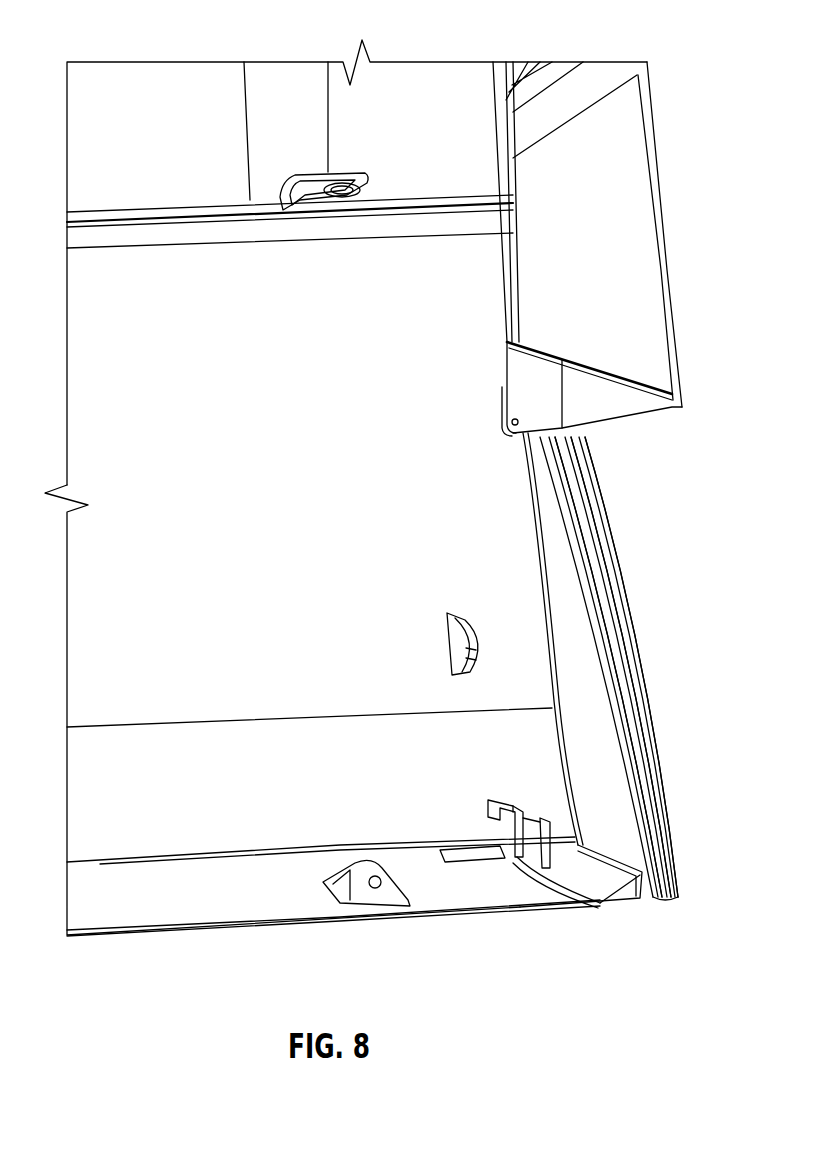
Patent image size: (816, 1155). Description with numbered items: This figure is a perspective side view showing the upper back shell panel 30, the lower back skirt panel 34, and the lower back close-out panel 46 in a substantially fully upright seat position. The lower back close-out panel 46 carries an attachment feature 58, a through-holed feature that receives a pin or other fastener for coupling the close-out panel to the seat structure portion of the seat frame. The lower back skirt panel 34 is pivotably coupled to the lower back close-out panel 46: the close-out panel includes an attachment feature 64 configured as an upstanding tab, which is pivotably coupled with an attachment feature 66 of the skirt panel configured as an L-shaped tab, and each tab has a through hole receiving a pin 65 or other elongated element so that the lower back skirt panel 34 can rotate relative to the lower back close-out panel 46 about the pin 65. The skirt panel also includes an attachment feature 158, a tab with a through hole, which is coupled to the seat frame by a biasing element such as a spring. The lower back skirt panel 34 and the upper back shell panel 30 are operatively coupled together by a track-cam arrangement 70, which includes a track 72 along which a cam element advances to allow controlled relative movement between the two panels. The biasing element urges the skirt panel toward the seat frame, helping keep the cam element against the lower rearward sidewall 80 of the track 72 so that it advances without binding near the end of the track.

The upper back shell panel 30 is at (627, 177).
The lower back skirt panel 34 is at (610, 775).
The lower back close-out panel 46 is at (598, 905).
The attachment feature 58 is at (388, 890).
The attachment feature 64 is at (478, 835).
The pin 65 is at (500, 850).
The attachment feature 66 is at (500, 793).
The track-cam arrangement 70 is at (562, 442).
The track 72 is at (582, 548).
The lower rearward sidewall 80 is at (590, 603).
The attachment feature 158 is at (448, 612).